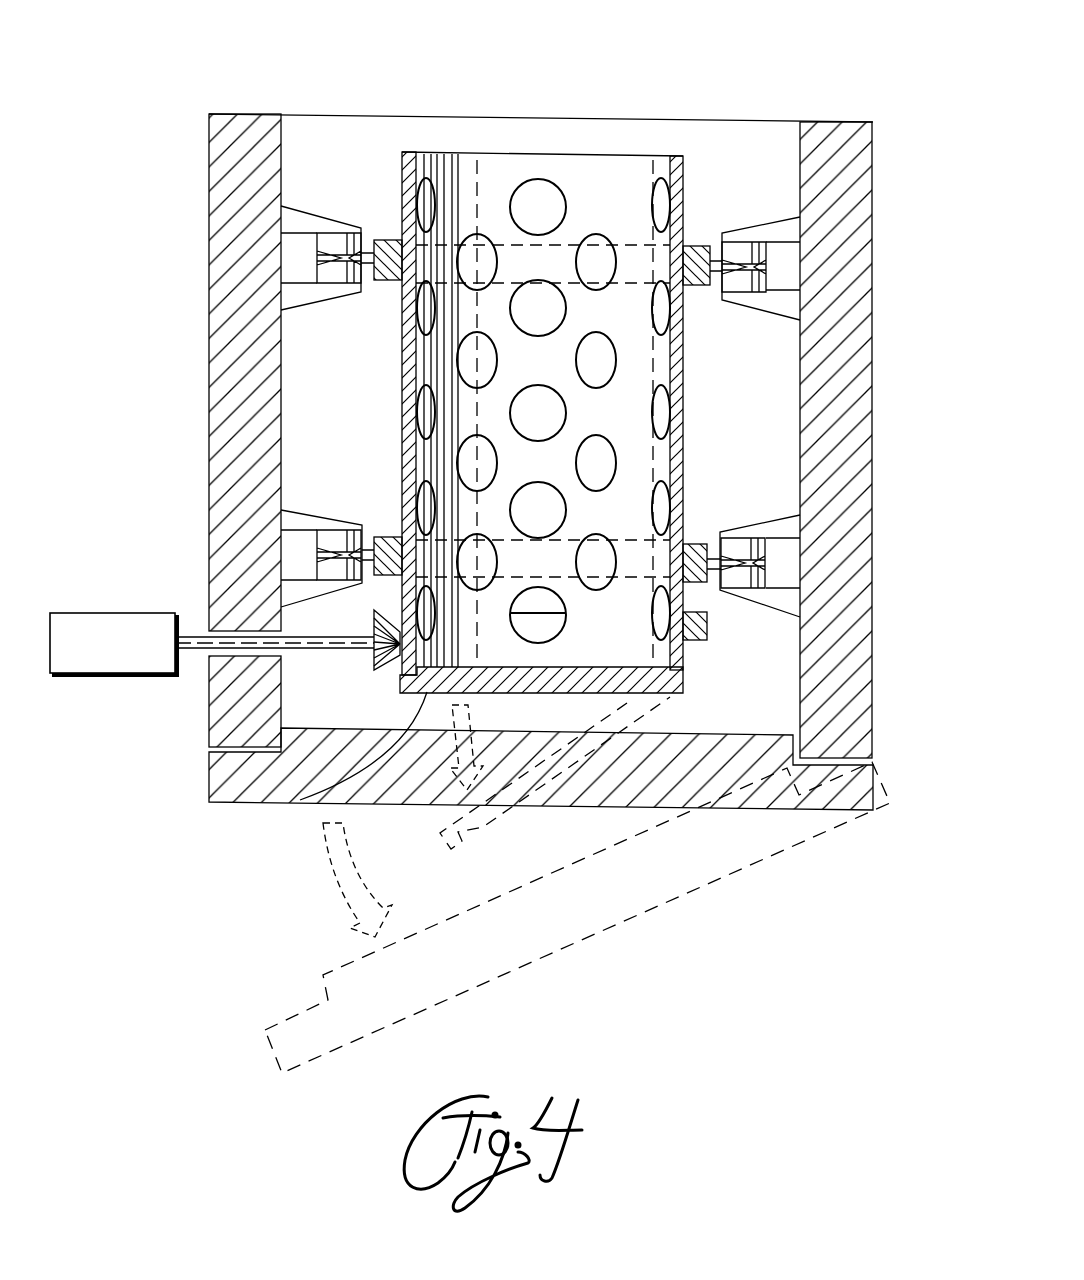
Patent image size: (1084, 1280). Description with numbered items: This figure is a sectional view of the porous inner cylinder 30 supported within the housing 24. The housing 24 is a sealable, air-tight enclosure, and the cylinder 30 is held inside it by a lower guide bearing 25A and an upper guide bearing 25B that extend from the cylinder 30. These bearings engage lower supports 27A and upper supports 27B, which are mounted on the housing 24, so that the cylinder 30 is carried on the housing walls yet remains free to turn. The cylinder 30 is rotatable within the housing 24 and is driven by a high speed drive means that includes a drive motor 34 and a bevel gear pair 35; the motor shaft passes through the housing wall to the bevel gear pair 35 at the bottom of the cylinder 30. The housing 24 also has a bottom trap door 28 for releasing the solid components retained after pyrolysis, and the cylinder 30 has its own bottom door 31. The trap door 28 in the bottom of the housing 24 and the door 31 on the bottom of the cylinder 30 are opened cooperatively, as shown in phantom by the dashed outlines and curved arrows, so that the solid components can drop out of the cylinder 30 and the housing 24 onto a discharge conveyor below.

The housing 24 is at (225, 308).
The lower guide bearing 25A is at (318, 548).
The upper guide bearing 25B is at (318, 240).
The lower supports 27A is at (302, 520).
The upper supports 27B is at (305, 220).
The bottom trap door 28 is at (222, 777).
The porous inner cylinder 30 is at (580, 178).
The bottom door 31 is at (297, 802).
The drive motor 34 is at (112, 665).
The bevel gear pair 35 is at (360, 620).